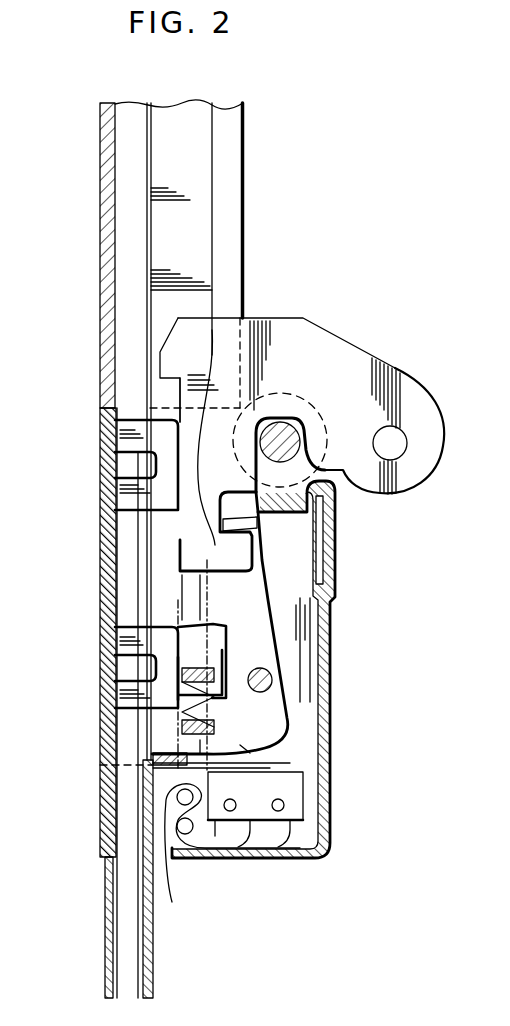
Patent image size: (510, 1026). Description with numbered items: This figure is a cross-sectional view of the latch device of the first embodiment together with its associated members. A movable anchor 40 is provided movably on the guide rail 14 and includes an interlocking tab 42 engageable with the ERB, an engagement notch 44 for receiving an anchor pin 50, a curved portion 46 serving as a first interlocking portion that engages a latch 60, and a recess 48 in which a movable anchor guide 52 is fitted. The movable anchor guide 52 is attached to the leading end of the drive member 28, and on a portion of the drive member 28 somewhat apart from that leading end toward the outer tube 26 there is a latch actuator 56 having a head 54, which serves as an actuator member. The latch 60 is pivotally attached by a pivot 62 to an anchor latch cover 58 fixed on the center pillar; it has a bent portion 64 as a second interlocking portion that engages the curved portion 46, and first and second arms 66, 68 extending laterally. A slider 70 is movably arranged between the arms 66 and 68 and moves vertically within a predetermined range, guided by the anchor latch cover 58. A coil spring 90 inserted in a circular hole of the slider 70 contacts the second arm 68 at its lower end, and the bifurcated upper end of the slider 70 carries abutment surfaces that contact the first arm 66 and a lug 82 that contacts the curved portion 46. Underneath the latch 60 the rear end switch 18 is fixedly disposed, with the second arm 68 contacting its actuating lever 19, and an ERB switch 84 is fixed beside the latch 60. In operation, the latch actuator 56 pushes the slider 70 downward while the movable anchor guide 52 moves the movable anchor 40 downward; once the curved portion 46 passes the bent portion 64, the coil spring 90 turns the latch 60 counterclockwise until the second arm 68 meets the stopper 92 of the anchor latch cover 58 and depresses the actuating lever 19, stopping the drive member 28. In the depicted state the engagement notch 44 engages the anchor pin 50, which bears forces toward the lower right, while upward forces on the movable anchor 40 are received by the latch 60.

The guide rail 14 is at (197, 170).
The rear end switch 18 is at (265, 812).
The actuating lever 19 is at (272, 787).
The outer tube 26 is at (105, 918).
The drive member 28 is at (128, 952).
The movable anchor 40 is at (279, 304).
The interlocking tab 42 is at (423, 413).
The engagement notch 44 is at (302, 432).
The curved portion 46 is at (245, 552).
The recess 48 is at (178, 388).
The anchor pin 50 is at (297, 417).
The movable anchor guide 52 is at (125, 497).
The head 54 is at (188, 612).
The latch actuator 56 is at (125, 698).
The anchor latch cover 58 is at (331, 828).
The latch 60 is at (294, 660).
The pivot 62 is at (274, 686).
The bent portion 64 is at (222, 521).
The first arm 66 is at (222, 590).
The second arm 68 is at (178, 742).
The slider 70 is at (276, 632).
The lug 82 is at (276, 590).
The ERB switch 84 is at (325, 527).
The coil spring 90 is at (262, 748).
The stopper 92 is at (173, 772).